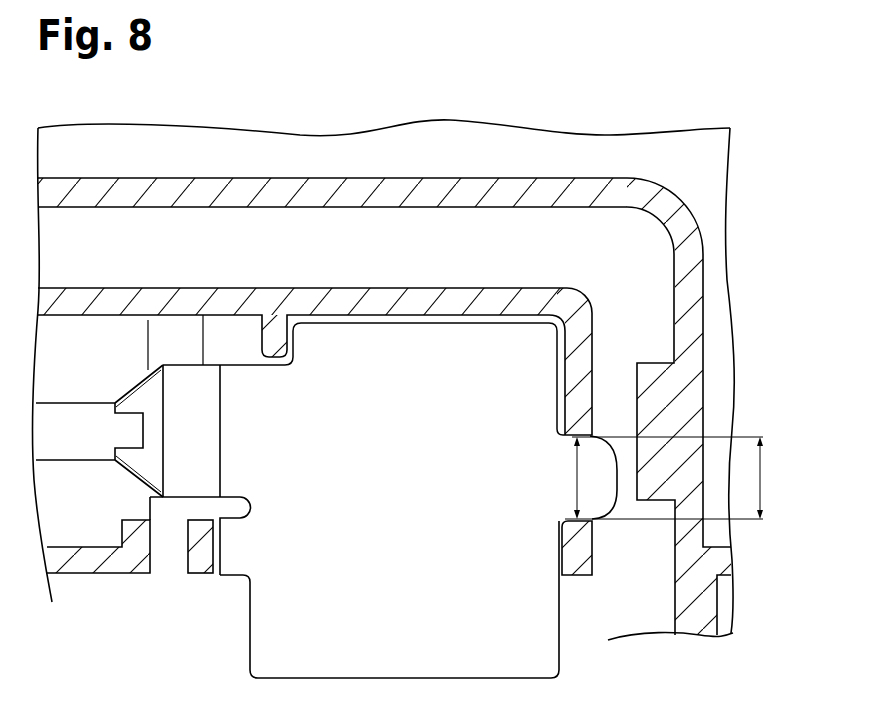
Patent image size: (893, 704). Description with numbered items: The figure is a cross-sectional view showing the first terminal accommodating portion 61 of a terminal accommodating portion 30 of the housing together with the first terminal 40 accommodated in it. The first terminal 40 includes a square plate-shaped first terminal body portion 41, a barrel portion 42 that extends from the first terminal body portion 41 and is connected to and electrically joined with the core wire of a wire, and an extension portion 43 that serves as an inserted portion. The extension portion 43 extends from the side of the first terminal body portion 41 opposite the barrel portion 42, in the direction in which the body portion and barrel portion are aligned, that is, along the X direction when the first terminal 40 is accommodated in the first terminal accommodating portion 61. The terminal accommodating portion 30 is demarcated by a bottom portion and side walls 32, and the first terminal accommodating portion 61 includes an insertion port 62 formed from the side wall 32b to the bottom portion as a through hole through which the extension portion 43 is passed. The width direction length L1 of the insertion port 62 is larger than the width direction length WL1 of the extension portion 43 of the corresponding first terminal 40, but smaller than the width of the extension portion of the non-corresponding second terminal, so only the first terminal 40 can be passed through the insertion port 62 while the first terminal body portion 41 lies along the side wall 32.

The terminal accommodating portion 30 is at (384, 406).
The side wall 32 is at (383, 302).
The side wall 32b is at (581, 566).
The first terminal 40 is at (240, 372).
The first terminal body portion 41 is at (520, 330).
The barrel portion 42 is at (73, 403).
The extension portion 43 is at (597, 472).
The first terminal accommodating portion 61 is at (425, 300).
The insertion port 62 is at (568, 518).
The width direction length of insertion port L1 is at (575, 478).
The width direction length of extension portion WL1 is at (762, 480).